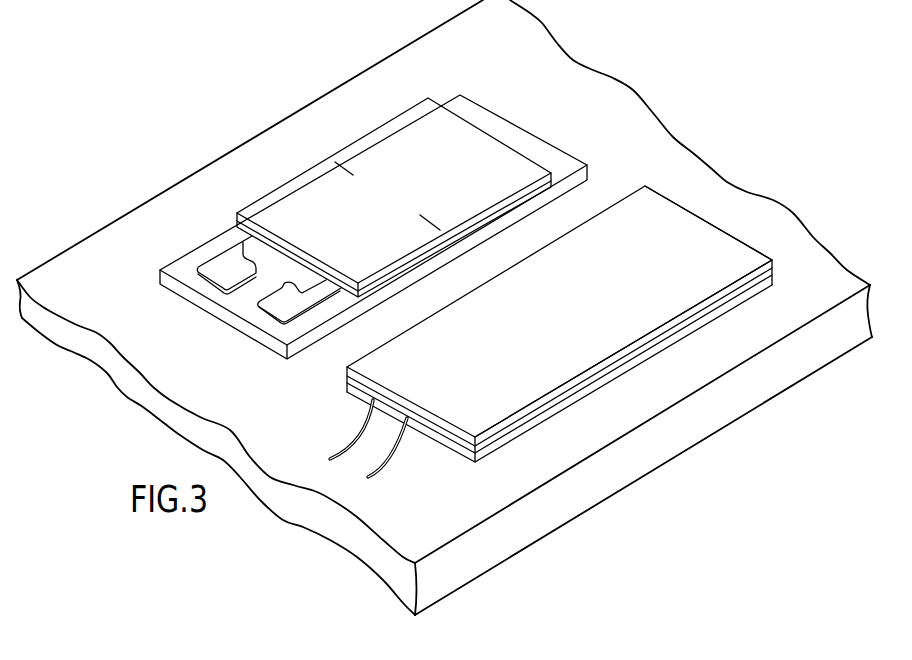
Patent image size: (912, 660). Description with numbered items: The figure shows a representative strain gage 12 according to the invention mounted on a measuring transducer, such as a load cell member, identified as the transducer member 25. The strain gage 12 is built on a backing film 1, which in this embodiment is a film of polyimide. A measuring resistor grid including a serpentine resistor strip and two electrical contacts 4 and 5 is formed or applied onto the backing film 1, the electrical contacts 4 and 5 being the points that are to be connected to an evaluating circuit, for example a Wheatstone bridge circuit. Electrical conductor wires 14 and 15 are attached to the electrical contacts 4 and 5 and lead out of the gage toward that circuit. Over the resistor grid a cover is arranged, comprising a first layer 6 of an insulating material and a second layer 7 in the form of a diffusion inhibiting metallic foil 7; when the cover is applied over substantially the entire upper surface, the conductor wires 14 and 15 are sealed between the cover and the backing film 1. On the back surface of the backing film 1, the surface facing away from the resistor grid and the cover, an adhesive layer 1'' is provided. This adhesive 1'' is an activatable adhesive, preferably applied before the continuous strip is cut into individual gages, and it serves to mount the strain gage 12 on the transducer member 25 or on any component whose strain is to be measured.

The transducer member 25 is at (329, 91).
The strain gage 12 is at (527, 122).
The adhesive layer 1'' is at (466, 303).
The electrical contact 4 is at (225, 262).
The electrical contact 5 is at (275, 307).
The electrical conductor wire 14 is at (350, 437).
The electrical conductor wire 15 is at (386, 461).
The backing film 1 is at (559, 328).
The first layer 6 is at (557, 398).
The diffusion inhibiting metallic foil 7 is at (577, 373).